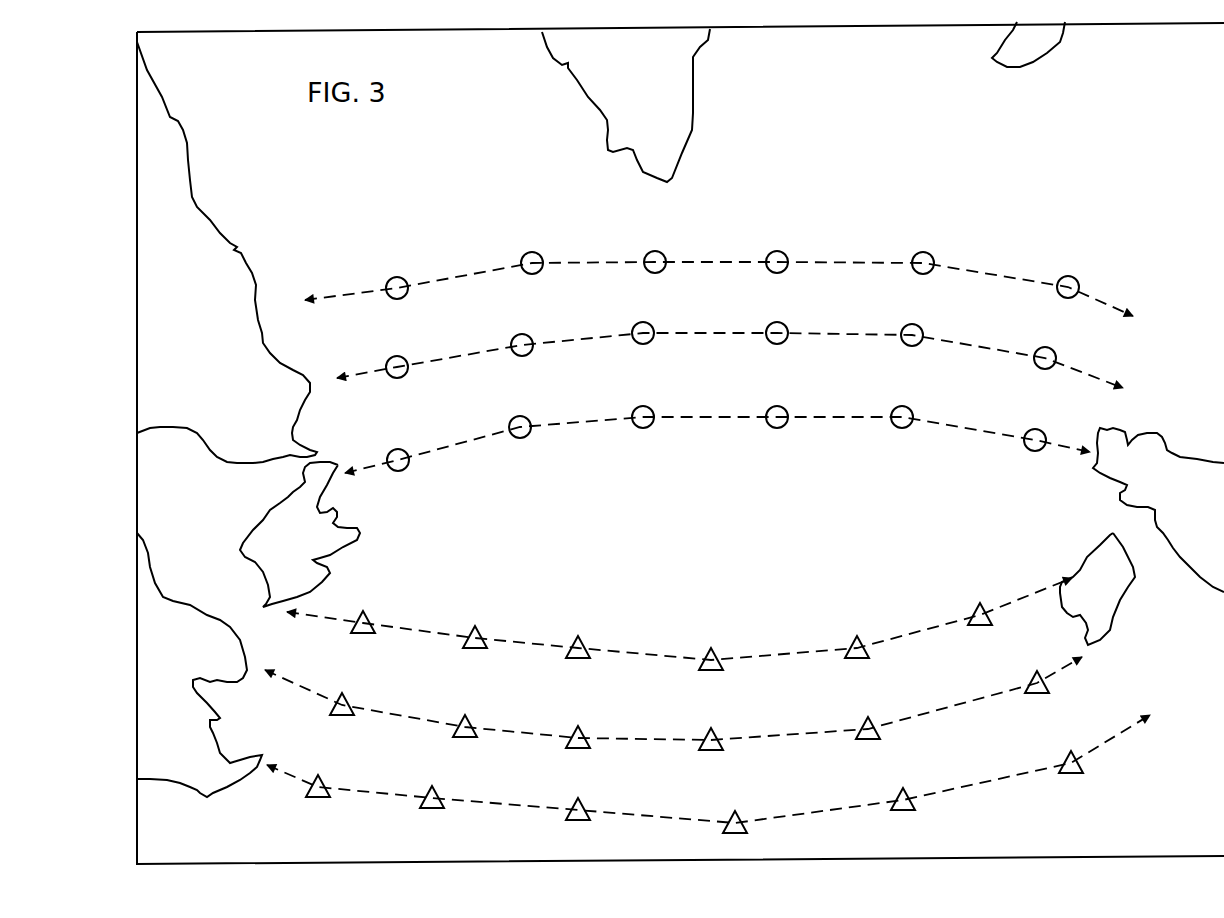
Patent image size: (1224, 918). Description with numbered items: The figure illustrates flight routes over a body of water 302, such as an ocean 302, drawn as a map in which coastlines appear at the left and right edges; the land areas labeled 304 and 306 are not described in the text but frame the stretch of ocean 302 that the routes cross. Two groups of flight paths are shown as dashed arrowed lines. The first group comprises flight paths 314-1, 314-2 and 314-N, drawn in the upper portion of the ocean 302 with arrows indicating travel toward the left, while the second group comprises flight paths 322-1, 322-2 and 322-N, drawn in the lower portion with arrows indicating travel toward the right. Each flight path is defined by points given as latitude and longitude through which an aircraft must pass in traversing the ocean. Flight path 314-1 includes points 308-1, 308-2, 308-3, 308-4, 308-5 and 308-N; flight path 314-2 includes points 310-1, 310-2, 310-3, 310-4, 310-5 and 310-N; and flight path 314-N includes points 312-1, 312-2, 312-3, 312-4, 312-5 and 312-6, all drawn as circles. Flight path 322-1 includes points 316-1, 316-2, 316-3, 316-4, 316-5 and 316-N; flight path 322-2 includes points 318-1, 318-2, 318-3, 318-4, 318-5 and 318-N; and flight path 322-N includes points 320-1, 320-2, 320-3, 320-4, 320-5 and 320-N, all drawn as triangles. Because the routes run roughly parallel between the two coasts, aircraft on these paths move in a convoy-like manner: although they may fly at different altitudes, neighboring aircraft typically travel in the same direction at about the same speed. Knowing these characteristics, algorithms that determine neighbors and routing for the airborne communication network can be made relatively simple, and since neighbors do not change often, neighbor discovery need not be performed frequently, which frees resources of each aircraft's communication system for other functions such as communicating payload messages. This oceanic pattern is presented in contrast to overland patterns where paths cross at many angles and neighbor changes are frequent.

The body of water 302 is at (456, 186).
The first landmass 304 is at (248, 419).
The second landmass 306 is at (1198, 502).
The point of flight path 314-1 308-1 is at (397, 277).
The point of flight path 314-1 308-2 is at (533, 252).
The point of flight path 314-1 308-3 is at (657, 253).
The point of flight path 314-1 308-4 is at (777, 251).
The point of flight path 314-1 308-5 is at (925, 252).
The point of flight path 314-1 308-N is at (1072, 284).
The point of flight path 314-2 310-1 is at (397, 356).
The point of flight path 314-2 310-2 is at (522, 334).
The point of flight path 314-2 310-3 is at (645, 323).
The point of flight path 314-2 310-4 is at (779, 323).
The point of flight path 314-2 310-5 is at (913, 325).
The point of flight path 314-2 310-N is at (1048, 350).
The point of flight path 314-N 312-1 is at (402, 450).
The point of flight path 314-N 312-2 is at (521, 417).
The point of flight path 314-N 312-3 is at (646, 409).
The point of flight path 314-N 312-4 is at (780, 409).
The point of flight path 314-N 312-5 is at (904, 408).
The point of flight path 314-N 312-6 is at (1040, 432).
The flight path 314-1 is at (472, 271).
The flight path 314-2 is at (472, 356).
The flight path 314-N is at (452, 451).
The point of flight path 322-1 316-1 is at (364, 612).
The point of flight path 322-1 316-2 is at (477, 627).
The point of flight path 322-1 316-3 is at (578, 640).
The point of flight path 322-1 316-4 is at (712, 650).
The point of flight path 322-1 316-5 is at (857, 640).
The point of flight path 322-1 316-N is at (980, 610).
The point of flight path 322-2 318-1 is at (341, 697).
The point of flight path 322-2 318-2 is at (466, 722).
The point of flight path 322-2 318-3 is at (578, 733).
The point of flight path 322-2 318-4 is at (722, 737).
The point of flight path 322-2 318-5 is at (868, 725).
The point of flight path 322-2 318-N is at (1035, 682).
The point of flight path 322-N 320-1 is at (328, 782).
The point of flight path 322-N 320-2 is at (435, 792).
The point of flight path 322-N 320-3 is at (578, 800).
The point of flight path 322-N 320-4 is at (736, 810).
The point of flight path 322-N 320-5 is at (903, 790).
The point of flight path 322-N 320-N is at (1071, 755).
The flight path 322-1 is at (422, 635).
The flight path 322-2 is at (407, 716).
The flight path 322-N is at (392, 790).